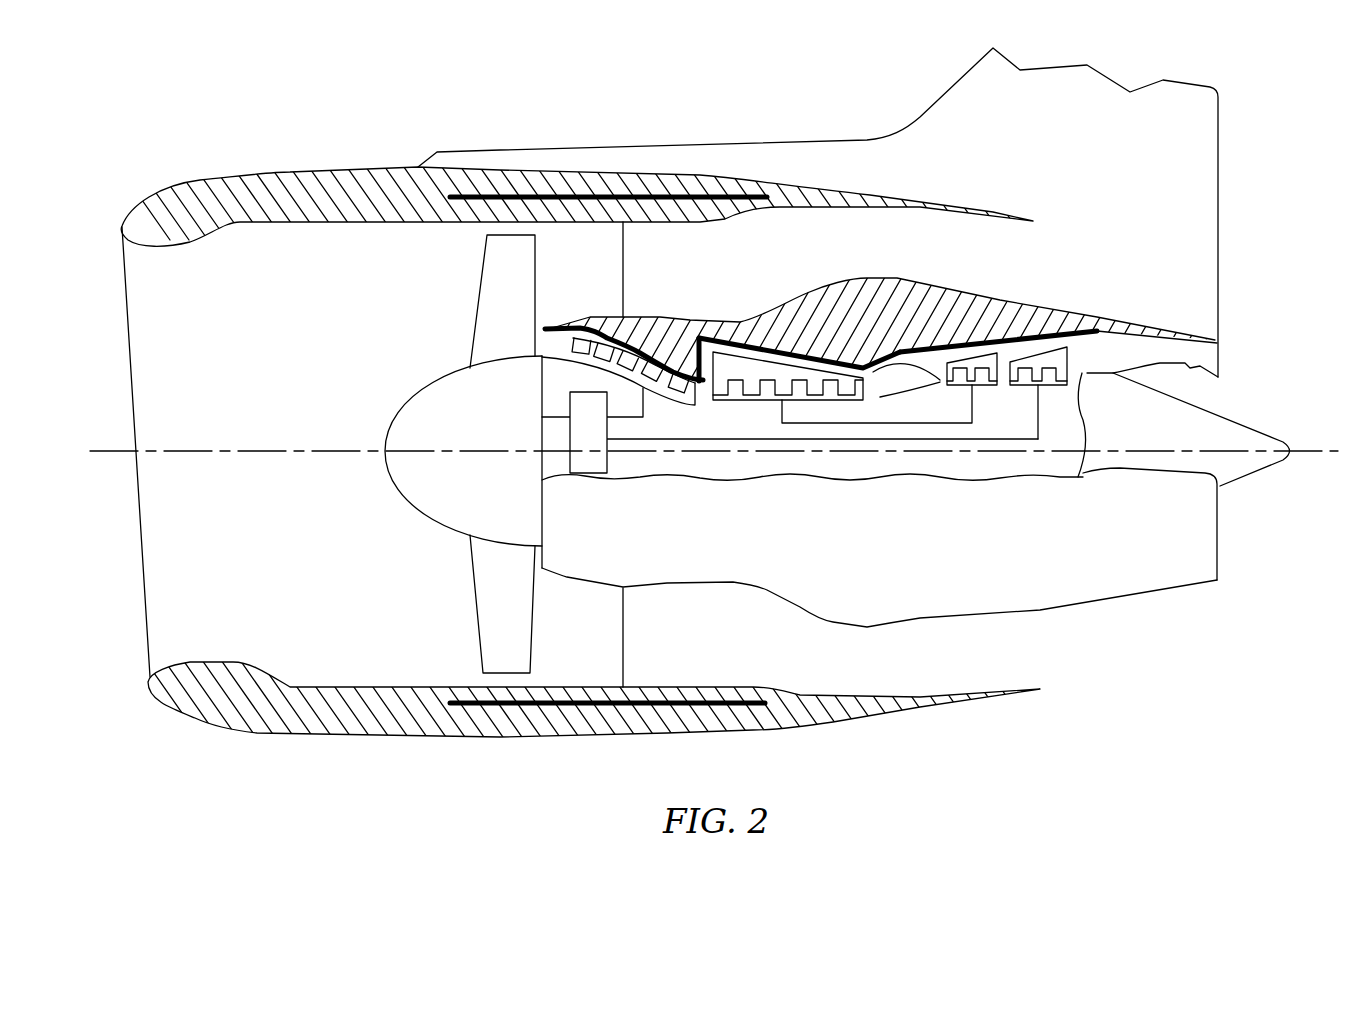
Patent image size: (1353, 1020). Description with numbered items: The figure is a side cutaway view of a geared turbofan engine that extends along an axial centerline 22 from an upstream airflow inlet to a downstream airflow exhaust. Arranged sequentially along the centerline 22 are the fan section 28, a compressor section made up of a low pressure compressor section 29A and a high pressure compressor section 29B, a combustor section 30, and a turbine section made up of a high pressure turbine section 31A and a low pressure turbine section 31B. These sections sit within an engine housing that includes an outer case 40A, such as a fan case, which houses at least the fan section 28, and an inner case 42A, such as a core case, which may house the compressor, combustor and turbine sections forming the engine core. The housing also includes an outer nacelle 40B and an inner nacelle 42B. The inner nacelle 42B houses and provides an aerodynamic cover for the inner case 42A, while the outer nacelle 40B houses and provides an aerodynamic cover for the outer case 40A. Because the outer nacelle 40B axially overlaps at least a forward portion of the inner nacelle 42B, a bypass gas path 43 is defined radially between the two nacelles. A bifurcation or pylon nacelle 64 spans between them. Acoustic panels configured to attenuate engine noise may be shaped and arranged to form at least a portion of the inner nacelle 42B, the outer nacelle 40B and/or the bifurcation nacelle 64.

The axial centerline 22 is at (1317, 455).
The fan section 28 is at (405, 519).
The low pressure compressor section 29A is at (670, 420).
The high pressure compressor section 29B is at (762, 413).
The combustor section 30 is at (912, 413).
The high pressure turbine section 31A is at (957, 400).
The low pressure turbine section 31B is at (1024, 400).
The outer case 40A is at (497, 195).
The outer nacelle 40B is at (296, 167).
The inner case 42A is at (1097, 320).
The inner nacelle 42B is at (1047, 312).
The bypass gas path 43 is at (896, 263).
The bifurcation nacelle 64 is at (637, 277).